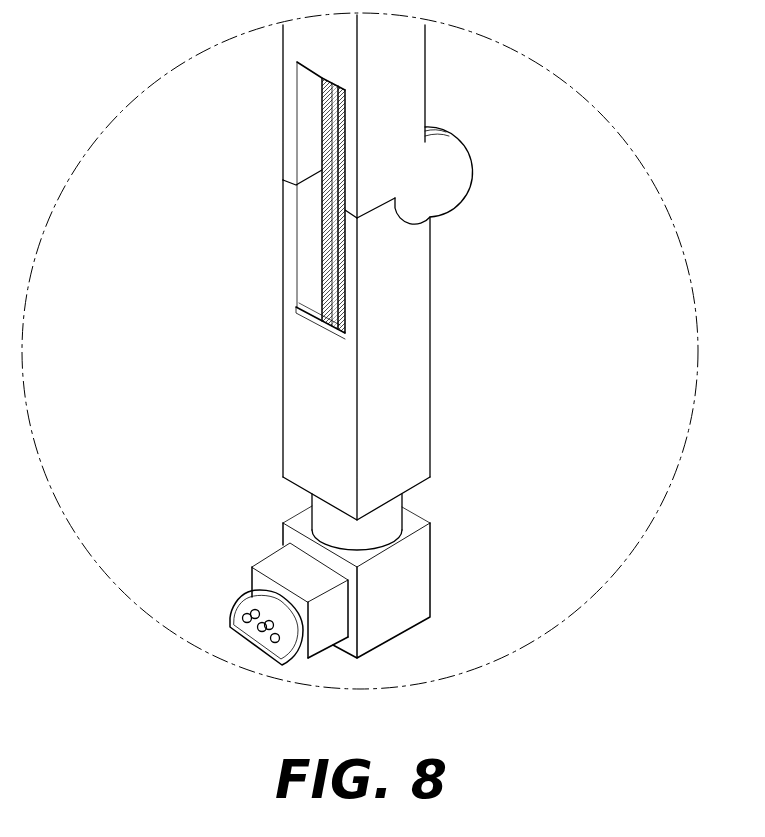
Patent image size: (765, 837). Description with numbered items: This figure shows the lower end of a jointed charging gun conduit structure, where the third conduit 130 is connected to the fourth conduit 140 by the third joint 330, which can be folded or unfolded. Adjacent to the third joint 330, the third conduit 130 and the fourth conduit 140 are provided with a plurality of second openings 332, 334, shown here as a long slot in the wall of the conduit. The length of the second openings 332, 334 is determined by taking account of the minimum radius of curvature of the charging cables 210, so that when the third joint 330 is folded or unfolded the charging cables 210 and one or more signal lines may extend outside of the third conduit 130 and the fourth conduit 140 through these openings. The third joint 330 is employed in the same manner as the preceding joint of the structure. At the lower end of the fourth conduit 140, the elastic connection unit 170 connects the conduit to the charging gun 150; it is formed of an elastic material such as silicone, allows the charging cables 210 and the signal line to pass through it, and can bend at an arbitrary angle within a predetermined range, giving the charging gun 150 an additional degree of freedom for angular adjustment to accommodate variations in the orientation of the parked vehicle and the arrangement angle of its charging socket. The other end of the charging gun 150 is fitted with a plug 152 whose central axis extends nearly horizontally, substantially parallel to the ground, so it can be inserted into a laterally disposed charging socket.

The third conduit 130 is at (415, 85).
The fourth conduit 140 is at (422, 342).
The third joint 330 is at (455, 172).
The second opening 332 is at (297, 137).
The second opening 334 is at (300, 268).
The charging cables 210 is at (323, 215).
The elastic connection unit 170 is at (315, 505).
The charging gun 150 is at (423, 575).
The plug 152 is at (248, 595).